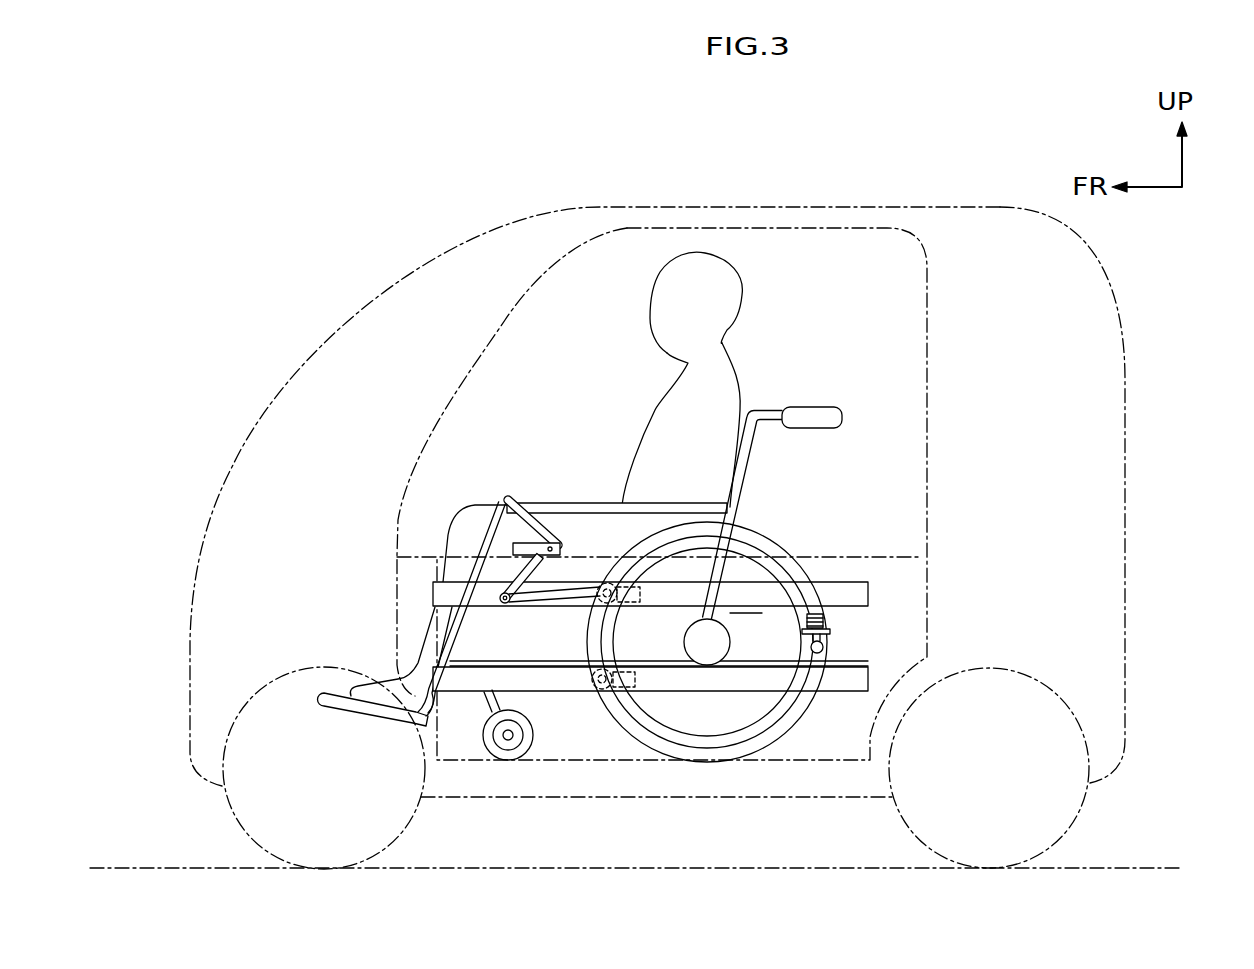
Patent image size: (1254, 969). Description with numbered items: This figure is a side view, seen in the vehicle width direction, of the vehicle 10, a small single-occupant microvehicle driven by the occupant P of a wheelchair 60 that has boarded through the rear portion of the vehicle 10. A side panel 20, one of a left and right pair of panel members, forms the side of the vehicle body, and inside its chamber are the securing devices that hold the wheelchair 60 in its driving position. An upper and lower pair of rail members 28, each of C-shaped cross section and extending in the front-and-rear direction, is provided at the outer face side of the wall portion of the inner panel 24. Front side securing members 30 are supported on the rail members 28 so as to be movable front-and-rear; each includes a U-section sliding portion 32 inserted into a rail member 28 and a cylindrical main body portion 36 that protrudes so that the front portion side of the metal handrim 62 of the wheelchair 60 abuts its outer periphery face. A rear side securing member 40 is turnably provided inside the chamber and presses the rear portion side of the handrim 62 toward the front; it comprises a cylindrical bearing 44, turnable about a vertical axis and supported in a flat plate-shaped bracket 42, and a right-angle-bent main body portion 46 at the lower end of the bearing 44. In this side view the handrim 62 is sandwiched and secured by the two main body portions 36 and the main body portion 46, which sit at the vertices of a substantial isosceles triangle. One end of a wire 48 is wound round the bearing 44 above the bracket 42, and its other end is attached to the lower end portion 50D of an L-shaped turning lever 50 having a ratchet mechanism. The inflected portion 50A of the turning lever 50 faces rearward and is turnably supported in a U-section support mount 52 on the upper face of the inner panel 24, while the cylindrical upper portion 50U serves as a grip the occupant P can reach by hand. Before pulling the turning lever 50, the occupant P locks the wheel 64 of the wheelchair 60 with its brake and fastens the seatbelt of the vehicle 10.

The vehicle 10 is at (866, 208).
The side panel 20 is at (719, 494).
The inner panel 24 is at (897, 555).
The rail member 28 is at (845, 582).
The front side securing member 30 is at (647, 645).
The sliding portion 32 is at (612, 590).
The main body portion 36 is at (620, 583).
The rear side securing member 40 is at (928, 610).
The bracket 42 is at (827, 633).
The bearing 44 is at (830, 622).
The main body portion 46 is at (822, 648).
The wire 48 is at (762, 614).
The turning lever 50 is at (535, 565).
The inflected portion 50A is at (586, 570).
The upper portion 50U is at (508, 500).
The lower end portion 50D is at (507, 604).
The support mount 52 is at (513, 549).
The wheelchair 60 is at (774, 410).
The handrim 62 is at (770, 572).
The wheel 64 is at (750, 527).
The occupant P is at (710, 257).